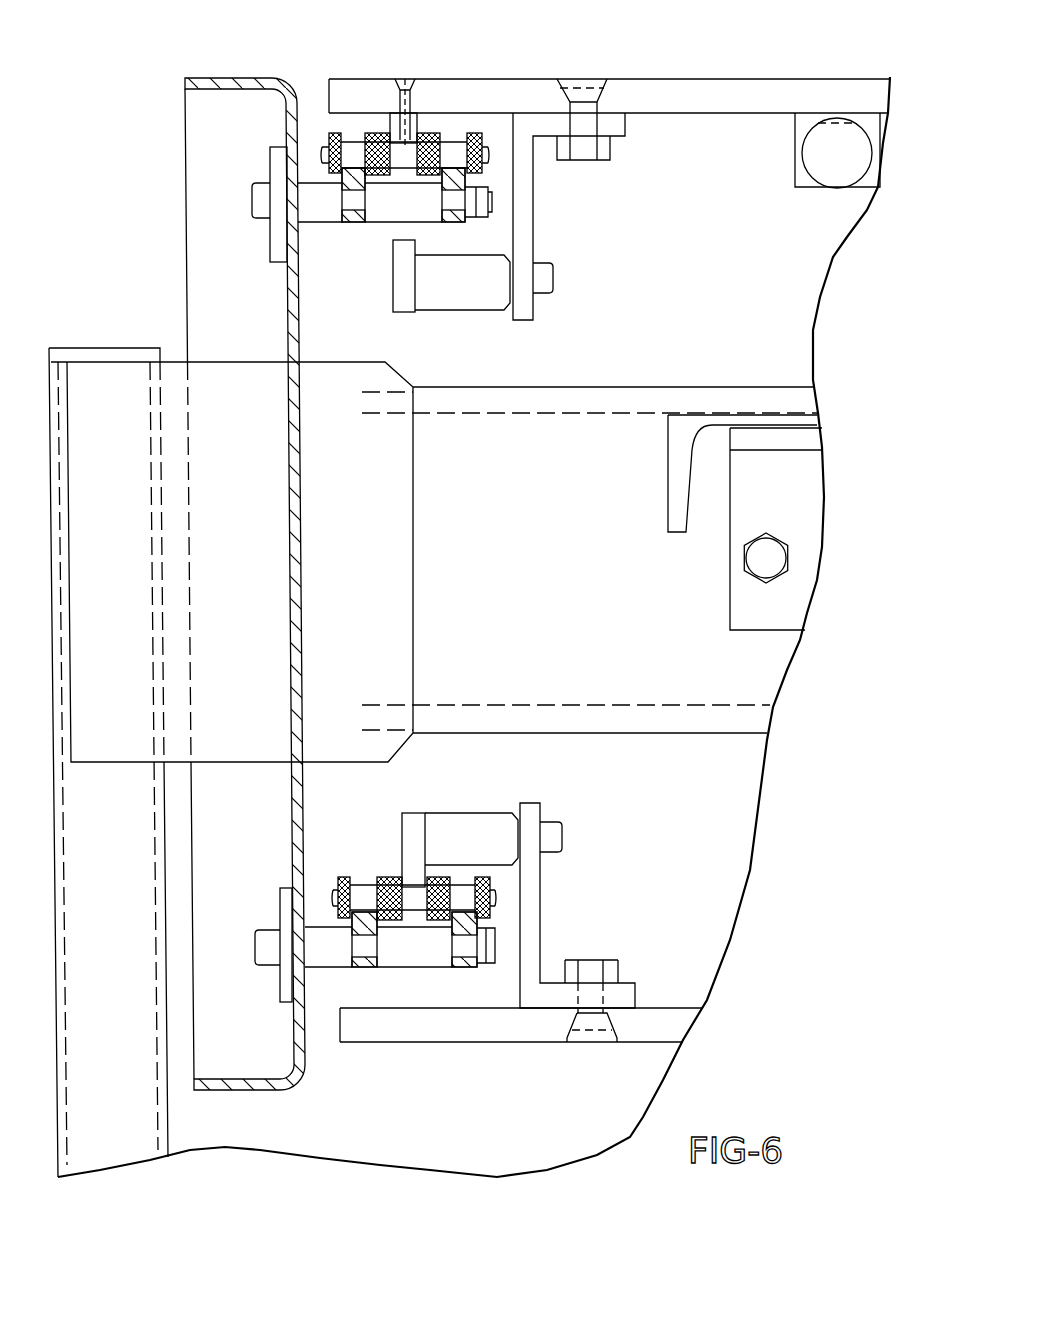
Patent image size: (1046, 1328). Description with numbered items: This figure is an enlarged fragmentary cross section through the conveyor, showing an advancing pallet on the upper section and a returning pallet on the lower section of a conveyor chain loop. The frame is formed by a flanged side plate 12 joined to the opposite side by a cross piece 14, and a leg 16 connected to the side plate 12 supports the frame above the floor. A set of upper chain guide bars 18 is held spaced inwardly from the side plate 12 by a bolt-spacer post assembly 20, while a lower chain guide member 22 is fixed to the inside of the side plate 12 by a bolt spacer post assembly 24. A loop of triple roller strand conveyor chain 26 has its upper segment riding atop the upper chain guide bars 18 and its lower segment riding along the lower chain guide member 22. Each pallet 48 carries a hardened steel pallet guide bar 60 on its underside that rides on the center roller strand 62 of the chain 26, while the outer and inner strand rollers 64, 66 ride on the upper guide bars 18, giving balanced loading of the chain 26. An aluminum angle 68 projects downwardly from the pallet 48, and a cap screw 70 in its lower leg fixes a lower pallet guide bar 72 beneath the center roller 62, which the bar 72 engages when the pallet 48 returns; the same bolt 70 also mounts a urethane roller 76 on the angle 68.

The flanged side plate 12 is at (272, 1091).
The cross piece 14 is at (668, 387).
The leg 16 is at (172, 1140).
The upper chain guide bar 18 is at (352, 225).
The bolt-spacer post assembly 20 is at (250, 191).
The lower chain guide member 22 is at (368, 970).
The bolt spacer post assembly 24 is at (248, 928).
The triple roller strand conveyor chain 26 is at (325, 127).
The pallet 48 is at (688, 77).
The pallet guide bar 60 is at (392, 125).
The center roller strand 62 is at (407, 150).
The outer strand roller 64 is at (354, 133).
The inner strand roller 66 is at (453, 133).
The aluminum angle 68 is at (540, 205).
The cap screw 70 is at (542, 265).
The lower pallet guide bar 72 is at (400, 297).
The urethane roller 76 is at (466, 315).